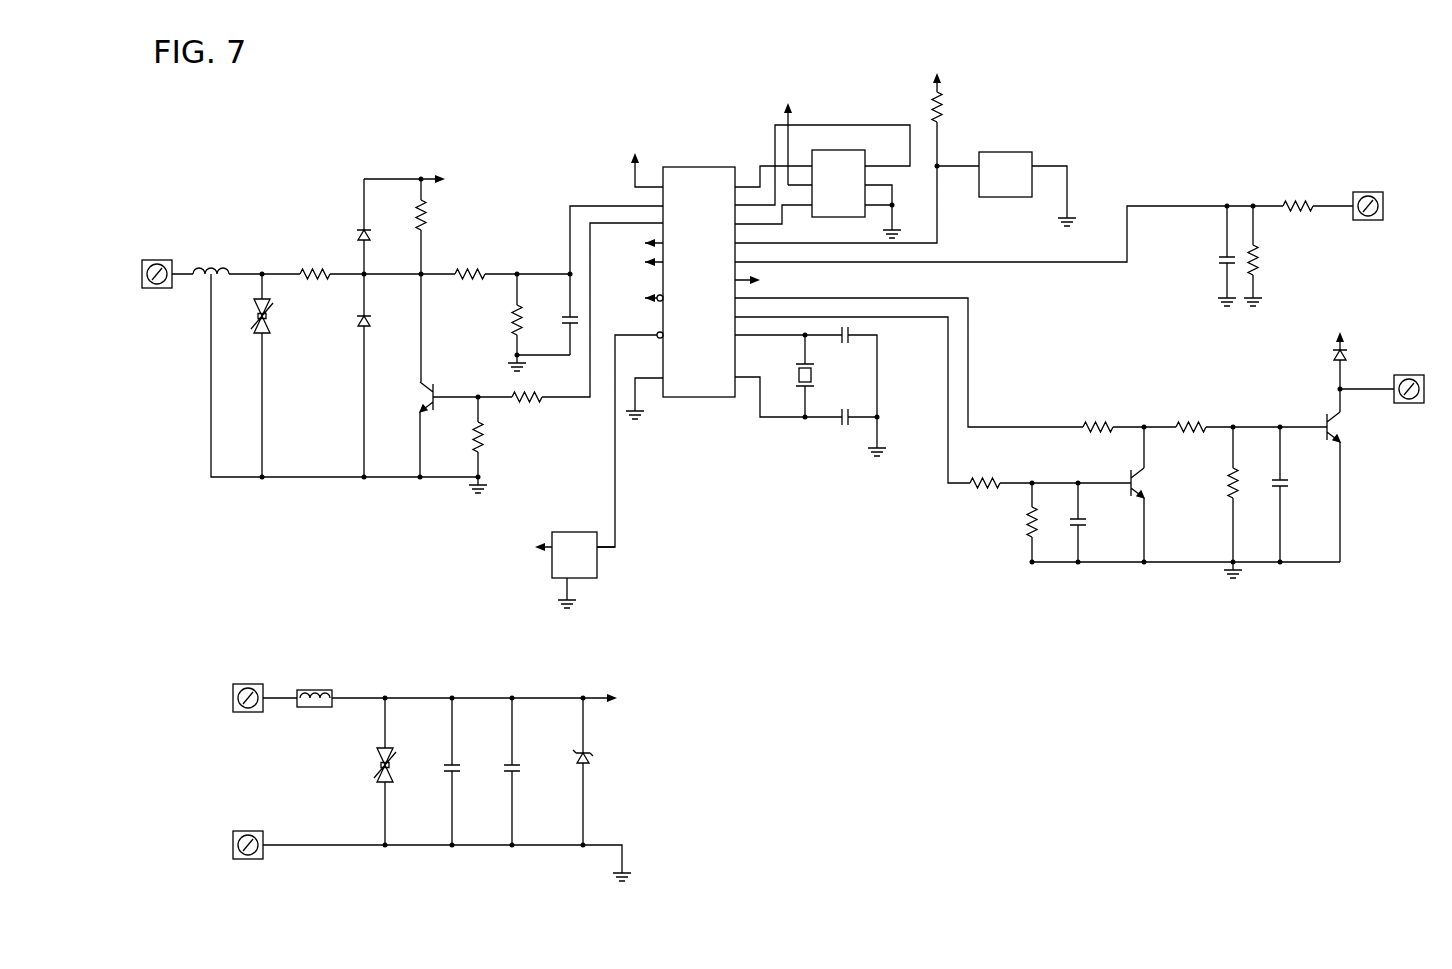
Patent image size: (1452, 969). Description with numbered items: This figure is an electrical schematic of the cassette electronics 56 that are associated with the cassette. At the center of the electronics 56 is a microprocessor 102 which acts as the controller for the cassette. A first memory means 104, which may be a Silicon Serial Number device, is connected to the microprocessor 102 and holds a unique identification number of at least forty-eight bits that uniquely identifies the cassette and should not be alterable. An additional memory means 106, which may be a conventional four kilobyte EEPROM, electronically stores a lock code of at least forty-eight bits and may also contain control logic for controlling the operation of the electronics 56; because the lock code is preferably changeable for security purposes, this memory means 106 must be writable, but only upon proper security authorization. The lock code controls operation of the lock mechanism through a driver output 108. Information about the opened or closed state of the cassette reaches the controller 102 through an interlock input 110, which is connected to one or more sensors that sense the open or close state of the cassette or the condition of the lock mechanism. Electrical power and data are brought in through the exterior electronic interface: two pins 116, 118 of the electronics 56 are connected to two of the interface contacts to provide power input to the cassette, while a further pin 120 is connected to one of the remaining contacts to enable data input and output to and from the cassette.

The cassette electronics 56 is at (1178, 125).
The microprocessor 102 is at (685, 165).
The first memory means 104 is at (1022, 152).
The additional memory means 106 is at (850, 150).
The driver output 108 is at (1417, 375).
The interlock input 110 is at (1375, 192).
The pin 116 is at (253, 682).
The pin 118 is at (248, 860).
The pin 120 is at (163, 258).